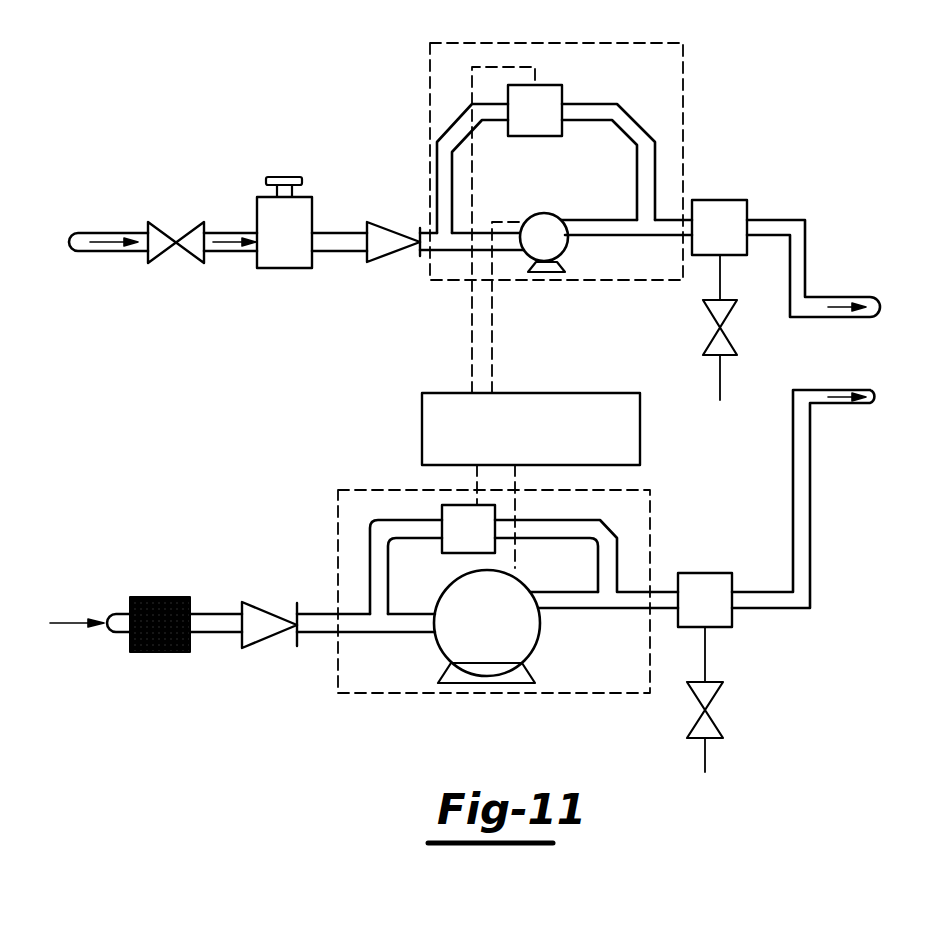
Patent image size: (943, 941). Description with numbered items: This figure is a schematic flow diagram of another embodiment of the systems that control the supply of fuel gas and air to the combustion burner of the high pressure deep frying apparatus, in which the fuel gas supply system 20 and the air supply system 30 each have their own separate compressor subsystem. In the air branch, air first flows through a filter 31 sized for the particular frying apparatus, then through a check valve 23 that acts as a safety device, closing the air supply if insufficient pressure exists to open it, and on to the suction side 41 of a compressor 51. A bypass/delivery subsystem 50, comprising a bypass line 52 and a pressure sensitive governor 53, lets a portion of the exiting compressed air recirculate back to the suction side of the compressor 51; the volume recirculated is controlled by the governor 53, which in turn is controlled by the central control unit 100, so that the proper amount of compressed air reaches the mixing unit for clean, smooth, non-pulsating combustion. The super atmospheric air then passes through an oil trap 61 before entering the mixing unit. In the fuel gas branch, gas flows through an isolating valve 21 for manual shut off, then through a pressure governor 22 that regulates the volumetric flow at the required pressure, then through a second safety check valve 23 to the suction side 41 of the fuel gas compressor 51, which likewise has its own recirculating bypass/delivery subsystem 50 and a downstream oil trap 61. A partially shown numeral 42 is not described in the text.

The fuel gas supply system 20 is at (332, 80).
The component 42 is at (282, 0).
The isolating valve 21 is at (162, 251).
The pressure governor 22 is at (284, 258).
The check valve 23 is at (390, 258).
The suction side 41 is at (432, 238).
The compressor 51 is at (566, 243).
The bypass line 52 is at (642, 138).
The pressure sensitive governor 53 is at (541, 102).
The bypass/delivery subsystem 50 is at (668, 43).
The oil trap 61 is at (733, 201).
The central control unit 100 is at (542, 449).
The air supply system 30 is at (306, 462).
The filter 31 is at (170, 652).